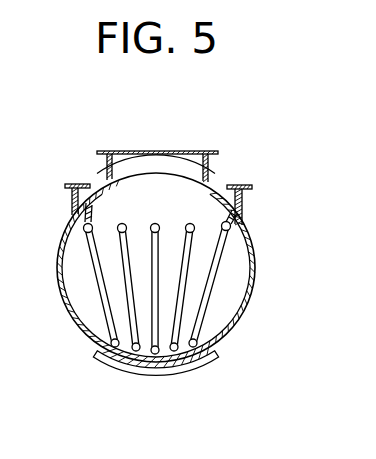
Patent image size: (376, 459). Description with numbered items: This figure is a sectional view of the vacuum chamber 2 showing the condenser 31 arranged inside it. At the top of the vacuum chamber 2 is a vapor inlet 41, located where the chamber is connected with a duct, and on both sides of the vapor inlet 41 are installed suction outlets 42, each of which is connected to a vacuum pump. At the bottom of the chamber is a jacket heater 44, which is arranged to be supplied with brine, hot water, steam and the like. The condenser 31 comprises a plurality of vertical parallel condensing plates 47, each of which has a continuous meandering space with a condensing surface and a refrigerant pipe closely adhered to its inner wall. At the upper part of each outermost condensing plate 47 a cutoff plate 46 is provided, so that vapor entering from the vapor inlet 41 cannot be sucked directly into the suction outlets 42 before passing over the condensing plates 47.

The vacuum chamber 2 is at (178, 173).
The condenser 31 is at (231, 272).
The vapor inlet 41 is at (131, 151).
The suction outlets 42 is at (71, 184).
The jacket heater 44 is at (120, 366).
The cutoff plate 46 is at (72, 210).
The condensing plates 47 is at (156, 258).